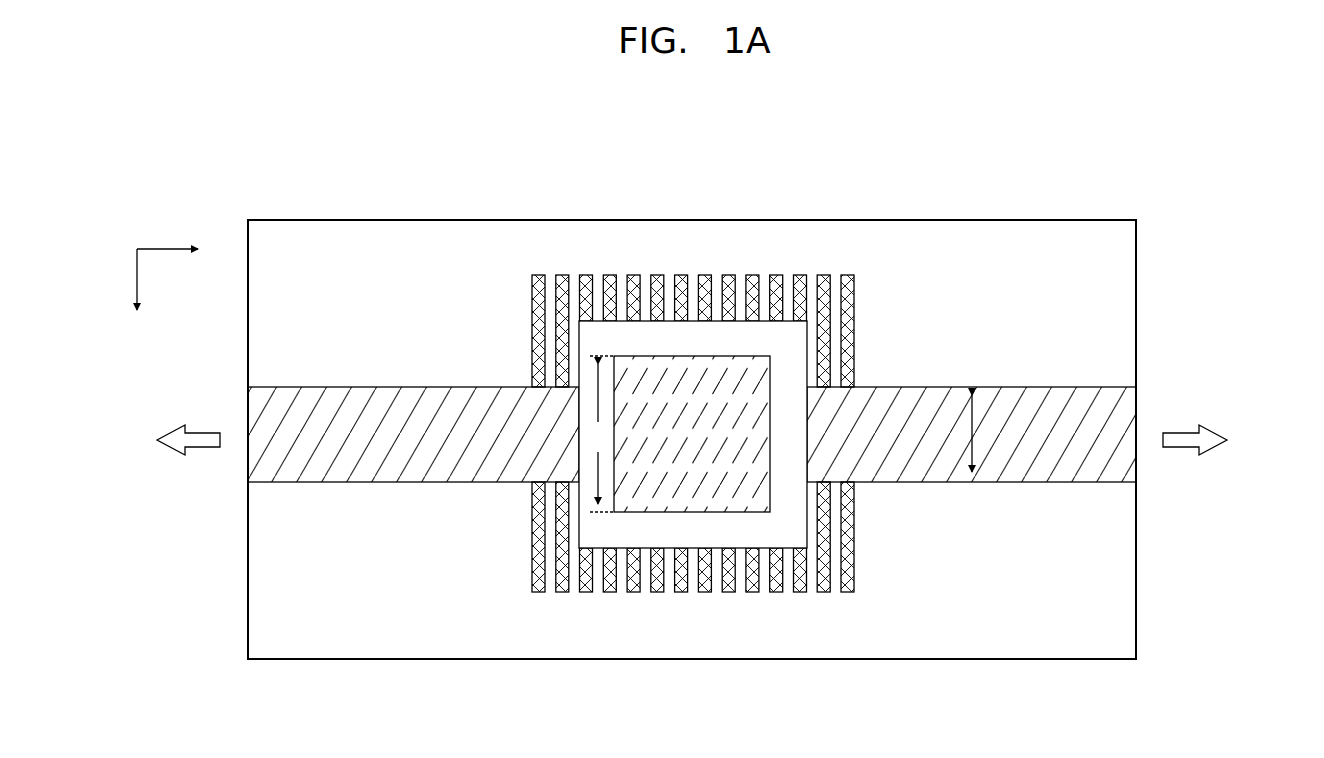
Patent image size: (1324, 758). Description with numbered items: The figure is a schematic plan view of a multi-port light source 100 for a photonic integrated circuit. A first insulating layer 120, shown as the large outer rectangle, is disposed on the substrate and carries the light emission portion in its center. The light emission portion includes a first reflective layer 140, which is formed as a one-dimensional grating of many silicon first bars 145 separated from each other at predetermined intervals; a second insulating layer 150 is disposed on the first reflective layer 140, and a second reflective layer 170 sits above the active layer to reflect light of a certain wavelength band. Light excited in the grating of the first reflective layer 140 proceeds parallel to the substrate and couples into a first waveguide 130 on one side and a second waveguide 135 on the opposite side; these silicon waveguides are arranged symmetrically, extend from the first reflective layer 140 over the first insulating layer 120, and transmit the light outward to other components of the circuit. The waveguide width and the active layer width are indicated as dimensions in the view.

The multi-port light source 100 is at (1060, 192).
The first insulating layer 120 is at (1136, 300).
The first waveguide 130 is at (248, 412).
The second waveguide 135 is at (1136, 411).
The first reflective layer 140 is at (693, 409).
The first bar 145 is at (587, 275).
The second insulating layer 150 is at (765, 321).
The second reflective layer 170 is at (690, 356).